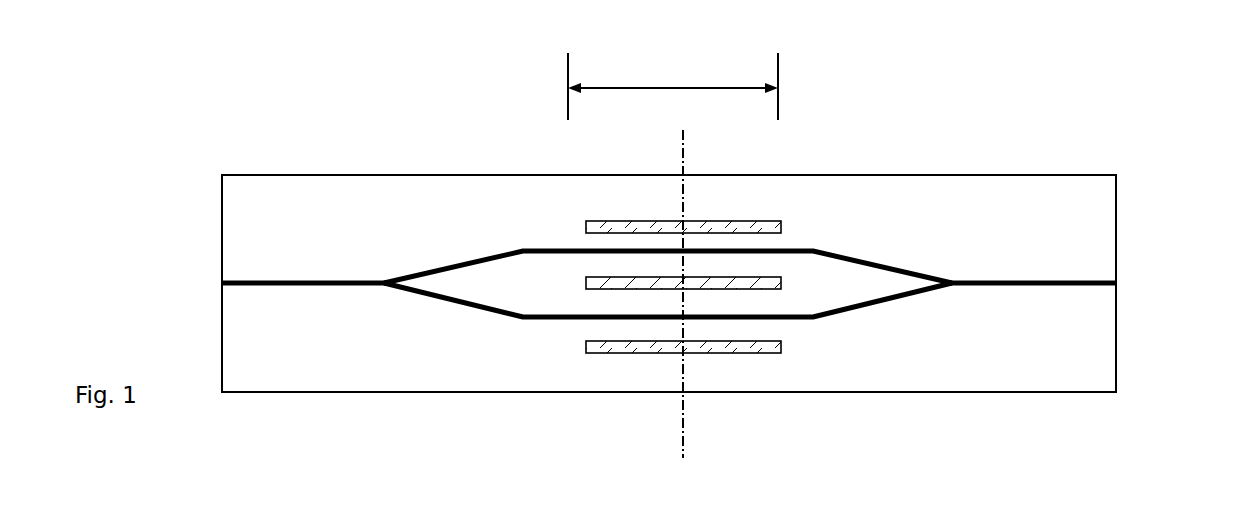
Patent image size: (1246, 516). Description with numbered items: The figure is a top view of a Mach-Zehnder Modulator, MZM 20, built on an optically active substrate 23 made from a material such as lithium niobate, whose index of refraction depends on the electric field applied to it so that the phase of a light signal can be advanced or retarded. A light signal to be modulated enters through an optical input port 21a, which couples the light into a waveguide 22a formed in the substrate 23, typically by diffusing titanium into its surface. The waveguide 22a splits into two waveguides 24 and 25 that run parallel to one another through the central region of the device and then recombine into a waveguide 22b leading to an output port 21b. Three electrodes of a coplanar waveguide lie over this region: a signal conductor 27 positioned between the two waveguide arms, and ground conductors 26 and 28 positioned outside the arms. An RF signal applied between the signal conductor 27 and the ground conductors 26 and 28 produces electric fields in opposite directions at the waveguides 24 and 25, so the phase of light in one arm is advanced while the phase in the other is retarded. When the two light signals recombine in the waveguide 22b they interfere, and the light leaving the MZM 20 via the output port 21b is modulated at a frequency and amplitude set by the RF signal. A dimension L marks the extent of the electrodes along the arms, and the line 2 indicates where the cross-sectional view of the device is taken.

The Mach-Zehnder Modulator 20 is at (224, 68).
The optical input port 21a is at (184, 283).
The output port 21b is at (1137, 283).
The waveguide 22a is at (319, 286).
The waveguide 22b is at (1006, 286).
The optically active substrate 23 is at (316, 240).
The waveguide 24 is at (494, 318).
The waveguide 25 is at (482, 256).
The ground conductor 26 is at (600, 224).
The signal conductor 27 is at (597, 281).
The ground conductor 28 is at (597, 347).
The section line 2- 2 is at (672, 147).
The electrode length L is at (673, 84).